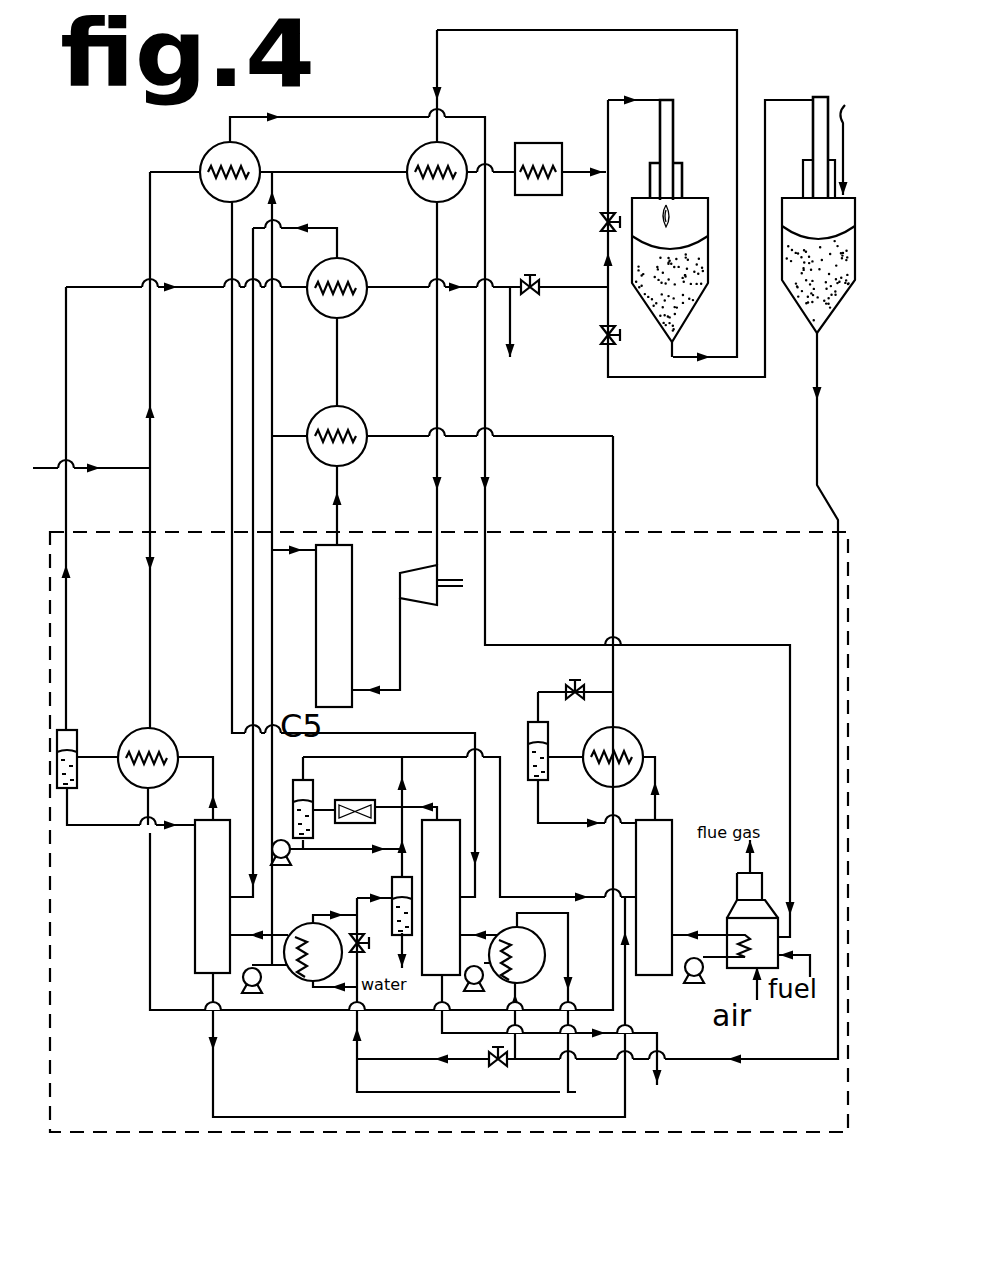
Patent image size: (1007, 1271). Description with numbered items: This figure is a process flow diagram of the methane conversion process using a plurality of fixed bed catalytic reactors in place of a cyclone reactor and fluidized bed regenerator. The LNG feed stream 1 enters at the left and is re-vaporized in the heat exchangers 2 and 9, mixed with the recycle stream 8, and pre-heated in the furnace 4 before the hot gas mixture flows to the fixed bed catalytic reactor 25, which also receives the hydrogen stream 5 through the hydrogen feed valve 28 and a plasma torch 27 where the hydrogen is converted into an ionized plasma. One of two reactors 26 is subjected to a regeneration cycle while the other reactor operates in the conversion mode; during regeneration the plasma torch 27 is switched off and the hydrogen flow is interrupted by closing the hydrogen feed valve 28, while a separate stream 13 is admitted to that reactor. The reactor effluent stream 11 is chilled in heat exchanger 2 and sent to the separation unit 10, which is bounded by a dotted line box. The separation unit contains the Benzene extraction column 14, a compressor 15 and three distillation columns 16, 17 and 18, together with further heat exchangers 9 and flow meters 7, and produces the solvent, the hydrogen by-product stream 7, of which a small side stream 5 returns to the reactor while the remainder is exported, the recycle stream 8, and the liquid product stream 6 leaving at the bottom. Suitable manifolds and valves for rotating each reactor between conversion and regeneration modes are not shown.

The LNG feed stream 1 is at (119, 468).
The heat exchanger 2 is at (228, 202).
The furnace 4 is at (552, 196).
The hydrogen stream 5 is at (608, 289).
The liquid product stream 6 is at (660, 1070).
The hydrogen by-product stream 7 is at (510, 360).
The recycle stream 8 is at (613, 688).
The heat exchanger 9 is at (358, 310).
The separation unit 10 is at (58, 1128).
The reactor effluent stream 11 is at (436, 42).
The inlet line 13 is at (860, 132).
The Benzene extraction column 14 is at (352, 590).
The compressor 15 is at (437, 583).
The distillation column 16 is at (458, 808).
The distillation column 17 is at (238, 800).
The distillation column 18 is at (662, 820).
The fixed bed catalytic reactor 25 is at (700, 296).
The reactor 26 is at (825, 300).
The plasma torch 27 is at (814, 96).
The hydrogen feed valve 28 is at (612, 342).